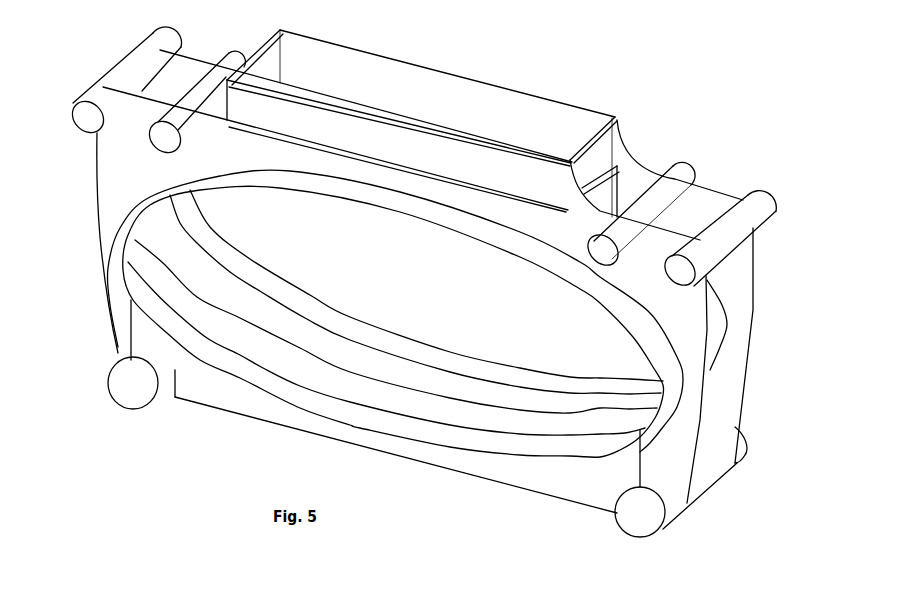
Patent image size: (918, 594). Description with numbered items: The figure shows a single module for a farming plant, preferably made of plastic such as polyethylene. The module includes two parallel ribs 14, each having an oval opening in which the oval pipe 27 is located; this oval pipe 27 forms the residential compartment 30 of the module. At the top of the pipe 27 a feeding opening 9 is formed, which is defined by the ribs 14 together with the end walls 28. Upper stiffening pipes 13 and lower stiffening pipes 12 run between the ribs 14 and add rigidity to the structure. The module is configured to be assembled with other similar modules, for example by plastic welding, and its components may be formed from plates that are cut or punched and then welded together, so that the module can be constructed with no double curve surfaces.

The feeding opening 9 is at (457, 110).
The lower stiffening pipes 12 is at (125, 388).
The upper stiffening pipes 13 is at (84, 118).
The ribs 14 is at (738, 381).
The oval pipe 27 is at (213, 227).
The end walls 28 is at (617, 120).
The residential compartment 30 is at (418, 296).